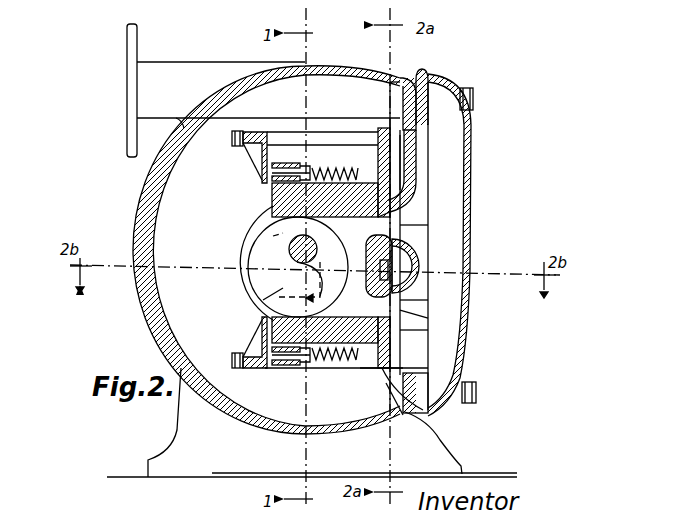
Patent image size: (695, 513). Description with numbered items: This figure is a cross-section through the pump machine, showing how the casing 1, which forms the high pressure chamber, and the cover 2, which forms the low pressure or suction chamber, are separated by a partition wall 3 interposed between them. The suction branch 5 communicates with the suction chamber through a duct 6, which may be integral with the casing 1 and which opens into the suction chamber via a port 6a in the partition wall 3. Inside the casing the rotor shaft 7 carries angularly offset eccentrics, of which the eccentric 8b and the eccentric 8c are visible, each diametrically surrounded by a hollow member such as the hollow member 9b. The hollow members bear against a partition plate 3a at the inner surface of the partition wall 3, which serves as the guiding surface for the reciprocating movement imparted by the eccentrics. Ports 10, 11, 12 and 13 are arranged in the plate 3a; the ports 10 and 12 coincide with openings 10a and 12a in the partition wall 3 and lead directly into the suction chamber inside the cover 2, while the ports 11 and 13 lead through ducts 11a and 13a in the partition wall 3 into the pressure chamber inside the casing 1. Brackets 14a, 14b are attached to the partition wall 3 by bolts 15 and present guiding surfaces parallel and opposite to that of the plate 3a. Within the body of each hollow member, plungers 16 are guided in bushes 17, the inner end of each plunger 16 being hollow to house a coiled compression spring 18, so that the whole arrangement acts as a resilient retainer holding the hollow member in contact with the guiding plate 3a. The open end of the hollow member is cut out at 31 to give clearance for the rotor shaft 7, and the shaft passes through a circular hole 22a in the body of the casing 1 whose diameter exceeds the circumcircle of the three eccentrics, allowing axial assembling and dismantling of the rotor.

The casing 1 is at (143, 315).
The cover 2 is at (466, 362).
The partition wall 3 is at (410, 203).
The partition plate 3a is at (405, 405).
The suction branch 5 is at (133, 32).
The duct 6 is at (376, 87).
The port 6a is at (430, 77).
The shaft 7 is at (298, 257).
The eccentric 8b is at (263, 300).
The eccentric 8c is at (255, 230).
The hollow member 9b is at (388, 385).
The port 10 is at (400, 330).
The opening 10a is at (402, 308).
The port 11 is at (402, 302).
The duct 11a is at (405, 262).
The port 12 is at (402, 228).
The opening 12a is at (403, 233).
The port 13 is at (392, 190).
The duct 13a is at (400, 152).
The bracket 14a is at (250, 368).
The bracket 14b is at (263, 129).
The bolt 15 is at (236, 130).
The plunger 16 is at (308, 368).
The bush 17 is at (286, 368).
The coiled compression spring 18 is at (336, 368).
The circular hole 22a is at (243, 273).
The cut-out 31 is at (273, 246).